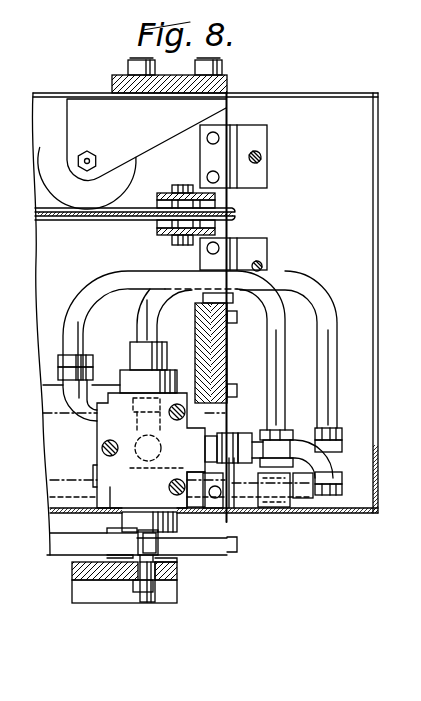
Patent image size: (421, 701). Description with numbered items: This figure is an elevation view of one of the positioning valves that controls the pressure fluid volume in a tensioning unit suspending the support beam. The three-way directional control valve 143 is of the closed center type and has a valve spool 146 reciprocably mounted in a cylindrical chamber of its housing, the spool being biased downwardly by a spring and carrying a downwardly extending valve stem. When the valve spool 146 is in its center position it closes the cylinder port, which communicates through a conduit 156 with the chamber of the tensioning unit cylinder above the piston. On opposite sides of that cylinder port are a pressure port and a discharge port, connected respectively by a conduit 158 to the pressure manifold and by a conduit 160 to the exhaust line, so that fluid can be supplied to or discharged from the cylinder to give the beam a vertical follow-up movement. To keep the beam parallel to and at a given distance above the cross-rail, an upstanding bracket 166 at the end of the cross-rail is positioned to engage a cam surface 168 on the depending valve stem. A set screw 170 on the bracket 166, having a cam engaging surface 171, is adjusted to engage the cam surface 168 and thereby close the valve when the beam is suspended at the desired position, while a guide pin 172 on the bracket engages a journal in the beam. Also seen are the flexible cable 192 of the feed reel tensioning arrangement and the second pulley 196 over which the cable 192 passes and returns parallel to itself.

The three-way directional control valve 143 is at (118, 466).
The valve spool 146 is at (143, 538).
The conduit 156 is at (133, 271).
The conduit 158 is at (302, 446).
The conduit 160 is at (320, 275).
The upstanding bracket 166 is at (90, 573).
The cam surface 168 is at (147, 547).
The set screw 170 is at (157, 602).
The cam engaging surface 171 is at (172, 558).
The guide pin 172 is at (112, 530).
The flexible cable 192 is at (106, 219).
The second pulley 196 is at (233, 206).